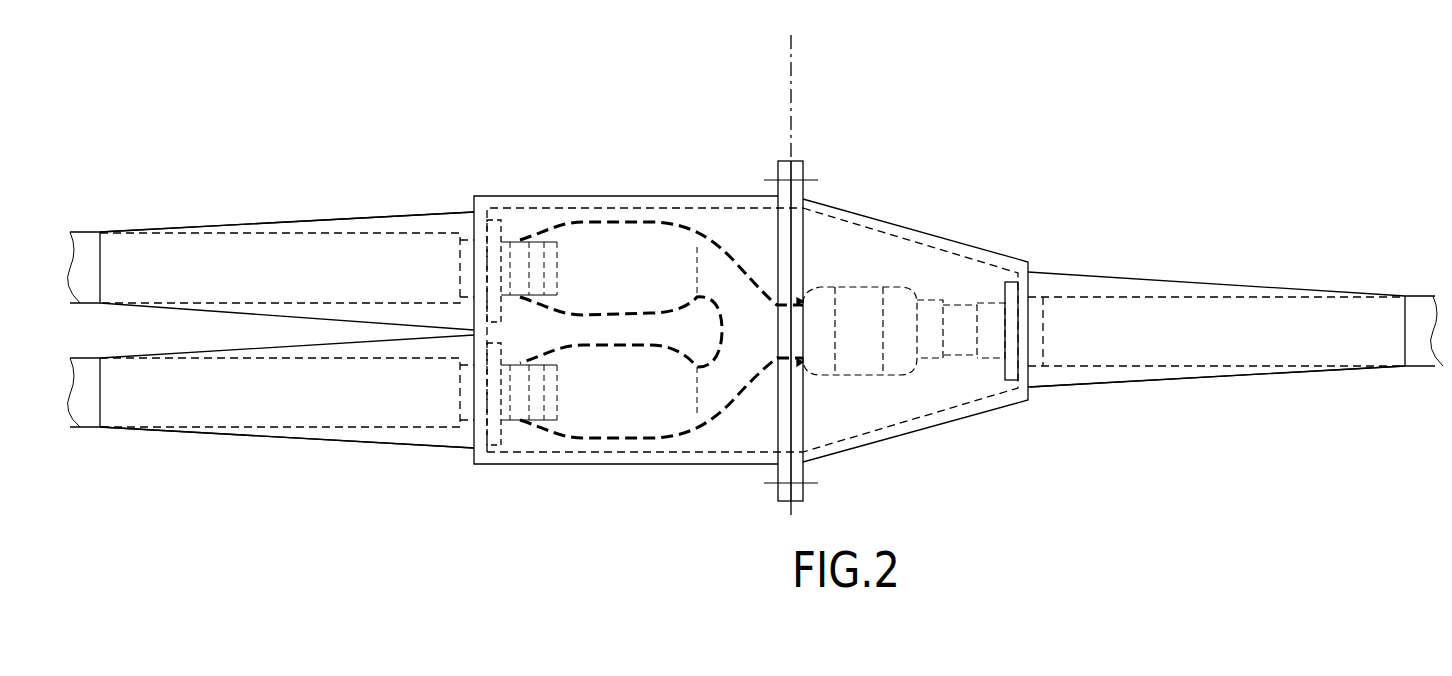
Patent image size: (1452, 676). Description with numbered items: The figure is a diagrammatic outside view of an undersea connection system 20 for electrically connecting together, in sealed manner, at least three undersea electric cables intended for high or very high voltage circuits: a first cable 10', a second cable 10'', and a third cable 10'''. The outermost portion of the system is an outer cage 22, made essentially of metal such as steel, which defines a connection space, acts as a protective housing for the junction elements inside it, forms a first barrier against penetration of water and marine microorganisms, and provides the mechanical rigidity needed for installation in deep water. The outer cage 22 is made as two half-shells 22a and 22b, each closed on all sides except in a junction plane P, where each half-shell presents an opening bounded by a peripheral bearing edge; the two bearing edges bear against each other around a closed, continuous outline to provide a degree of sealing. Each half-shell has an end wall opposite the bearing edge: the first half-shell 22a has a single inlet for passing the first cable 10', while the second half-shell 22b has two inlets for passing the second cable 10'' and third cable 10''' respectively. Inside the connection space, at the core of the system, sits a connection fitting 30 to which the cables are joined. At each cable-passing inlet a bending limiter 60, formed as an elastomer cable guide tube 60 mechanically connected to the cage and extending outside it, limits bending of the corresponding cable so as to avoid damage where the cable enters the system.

The undersea connection system 20 is at (1058, 189).
The outer cage 22 is at (862, 212).
The first half-shell 22a is at (955, 240).
The second half-shell 22b is at (636, 196).
The connection fitting 30 is at (730, 372).
The bending limiter 60 is at (367, 214).
The first cable 10' is at (1235, 315).
The second cable 10'' is at (269, 255).
The third cable 10''' is at (269, 412).
The junction plane P is at (793, 48).